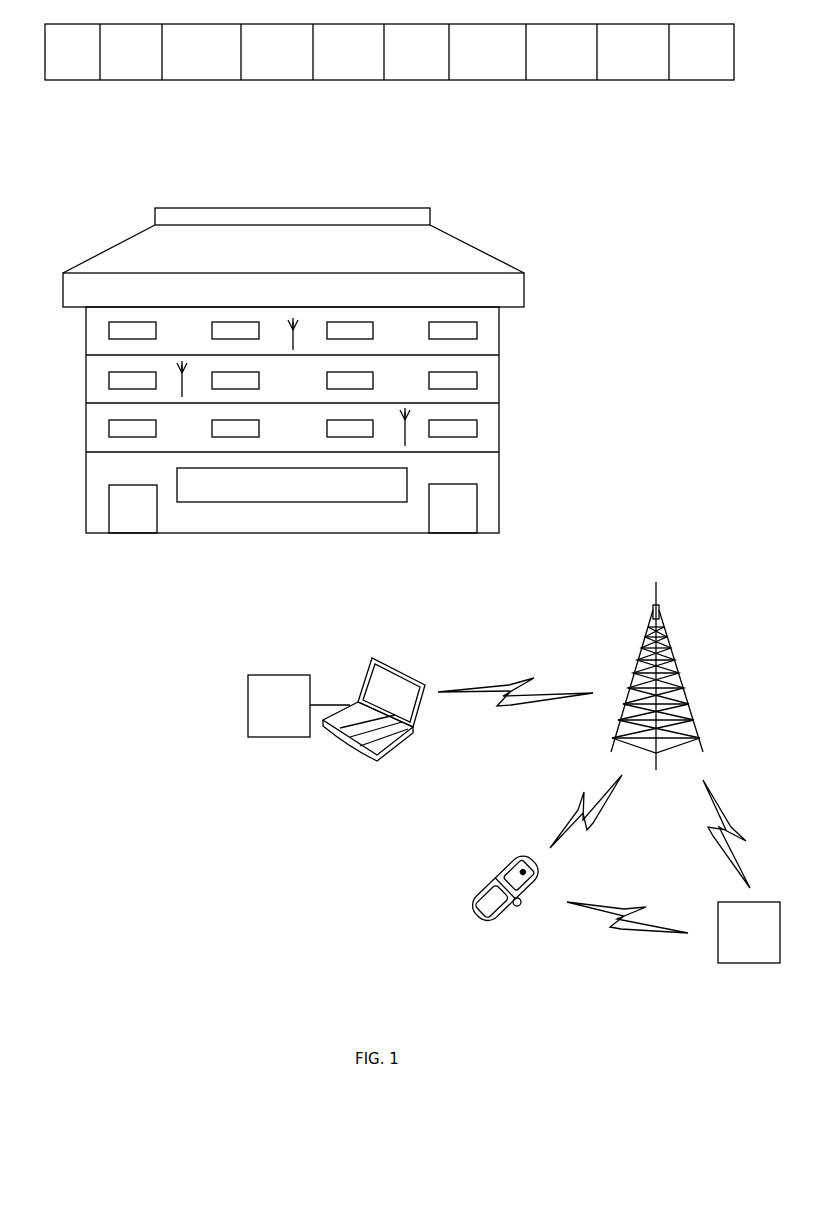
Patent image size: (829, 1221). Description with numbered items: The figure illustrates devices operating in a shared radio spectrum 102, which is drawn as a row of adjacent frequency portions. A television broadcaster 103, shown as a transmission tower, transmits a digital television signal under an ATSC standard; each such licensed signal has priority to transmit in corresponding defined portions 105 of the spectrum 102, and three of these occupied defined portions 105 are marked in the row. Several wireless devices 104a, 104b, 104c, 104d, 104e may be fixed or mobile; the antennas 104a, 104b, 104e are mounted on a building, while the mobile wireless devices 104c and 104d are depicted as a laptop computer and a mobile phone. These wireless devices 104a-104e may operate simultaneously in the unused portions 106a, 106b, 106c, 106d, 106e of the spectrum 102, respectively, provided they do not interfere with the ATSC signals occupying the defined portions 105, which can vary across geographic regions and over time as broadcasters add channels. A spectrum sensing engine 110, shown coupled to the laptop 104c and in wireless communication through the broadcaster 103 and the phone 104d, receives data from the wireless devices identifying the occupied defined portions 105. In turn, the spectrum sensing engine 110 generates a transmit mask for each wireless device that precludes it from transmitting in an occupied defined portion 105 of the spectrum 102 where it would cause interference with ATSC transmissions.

The spectrum 102 is at (407, 97).
The television broadcaster 103 is at (658, 618).
The wireless device 104a is at (407, 432).
The wireless device 104b is at (290, 337).
The mobile wireless device 104c is at (425, 707).
The mobile wireless device 104d is at (508, 912).
The wireless device 104e is at (182, 393).
The defined portion of the spectrum 105 is at (216, 62).
The unused portion of the spectrum 106a is at (123, 52).
The unused portion of the spectrum 106b is at (265, 52).
The unused portion of the spectrum 106c is at (432, 48).
The unused portion of the spectrum 106d is at (572, 48).
The unused portion of the spectrum 106e is at (638, 58).
The spectrum sensing engine 110 is at (292, 718).